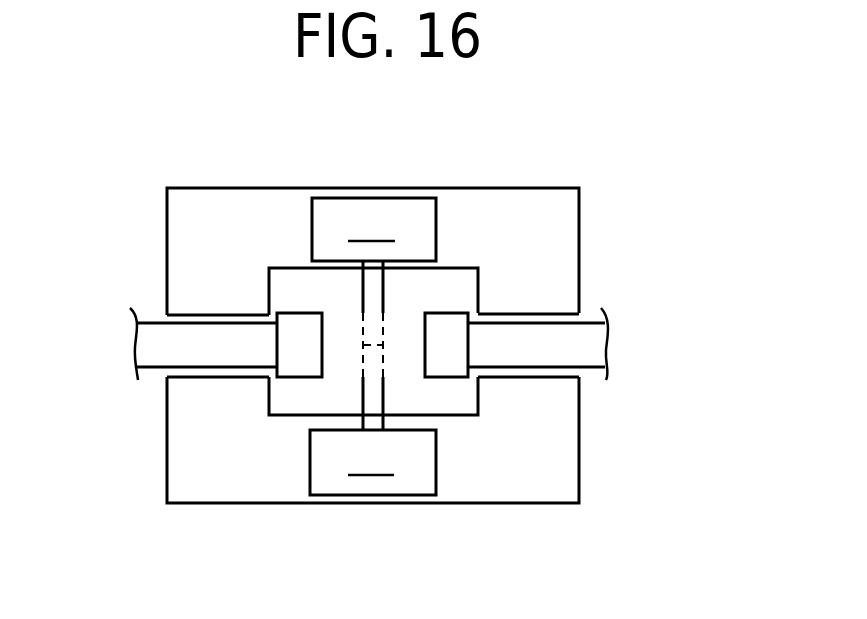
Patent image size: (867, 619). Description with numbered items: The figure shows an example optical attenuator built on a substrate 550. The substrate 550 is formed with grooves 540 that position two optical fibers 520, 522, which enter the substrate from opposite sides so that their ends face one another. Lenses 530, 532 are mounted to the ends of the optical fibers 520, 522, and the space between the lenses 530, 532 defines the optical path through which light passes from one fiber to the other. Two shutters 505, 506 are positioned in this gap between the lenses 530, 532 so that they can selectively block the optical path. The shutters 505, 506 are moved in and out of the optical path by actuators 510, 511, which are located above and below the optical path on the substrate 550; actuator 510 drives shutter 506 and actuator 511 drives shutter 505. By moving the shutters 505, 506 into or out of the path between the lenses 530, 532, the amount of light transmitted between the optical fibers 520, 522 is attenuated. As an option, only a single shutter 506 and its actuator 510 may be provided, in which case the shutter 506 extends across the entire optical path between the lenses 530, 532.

The shutter 505 is at (373, 400).
The shutter 506 is at (385, 292).
The actuator 510 is at (374, 229).
The actuator 511 is at (373, 462).
The optical fiber 520 is at (150, 372).
The optical fiber 522 is at (560, 360).
The lens 530 is at (287, 380).
The lens 532 is at (447, 378).
The groove 540 is at (167, 317).
The substrate 550 is at (558, 460).